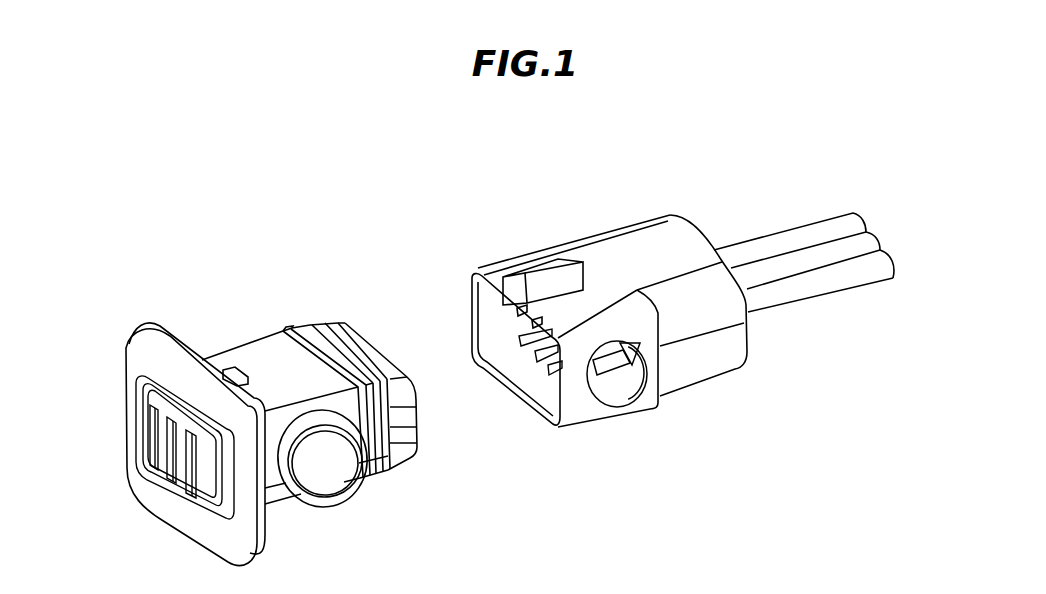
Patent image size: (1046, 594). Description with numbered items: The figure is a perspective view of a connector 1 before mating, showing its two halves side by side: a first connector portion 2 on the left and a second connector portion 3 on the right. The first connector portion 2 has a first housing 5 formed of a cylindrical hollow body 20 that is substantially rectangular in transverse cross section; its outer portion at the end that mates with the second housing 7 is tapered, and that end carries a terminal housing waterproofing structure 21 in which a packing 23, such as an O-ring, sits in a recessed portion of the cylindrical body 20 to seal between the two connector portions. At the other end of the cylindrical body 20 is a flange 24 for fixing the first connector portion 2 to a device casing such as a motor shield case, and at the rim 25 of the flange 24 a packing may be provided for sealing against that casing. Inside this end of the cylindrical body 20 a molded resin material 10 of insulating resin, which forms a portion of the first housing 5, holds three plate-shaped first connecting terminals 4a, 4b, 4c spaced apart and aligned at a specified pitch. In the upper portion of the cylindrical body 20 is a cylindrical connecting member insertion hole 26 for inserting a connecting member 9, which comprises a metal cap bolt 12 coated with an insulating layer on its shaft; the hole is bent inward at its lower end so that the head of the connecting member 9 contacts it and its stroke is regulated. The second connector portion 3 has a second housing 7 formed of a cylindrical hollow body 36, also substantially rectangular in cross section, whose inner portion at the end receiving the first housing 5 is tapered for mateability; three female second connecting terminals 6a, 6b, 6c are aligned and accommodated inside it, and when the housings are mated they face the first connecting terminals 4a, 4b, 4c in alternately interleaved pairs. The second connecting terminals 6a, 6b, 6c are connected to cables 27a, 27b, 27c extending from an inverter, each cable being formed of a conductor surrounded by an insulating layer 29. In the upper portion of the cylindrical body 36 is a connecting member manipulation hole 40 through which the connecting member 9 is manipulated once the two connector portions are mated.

The connector 1 is at (367, 172).
The first connector portion 2 is at (271, 360).
The second connector portion 3 is at (636, 249).
The first connecting terminal 4a is at (184, 488).
The first connecting terminal 4b is at (170, 478).
The first connecting terminal 4c is at (152, 445).
The first housing 5 is at (337, 325).
The second connecting terminal 6a is at (550, 374).
The second connecting terminal 6b is at (535, 358).
The second connecting terminal 6c is at (522, 343).
The second housing 7 is at (680, 233).
The connecting member 9 is at (331, 470).
The molded resin material 10 is at (195, 512).
The bolt 12 is at (311, 488).
The cylindrical body 20 is at (408, 436).
The terminal housing waterproofing structure 21 is at (292, 320).
The packing 23 is at (340, 367).
The flange 24 is at (163, 323).
The rim 25 is at (143, 350).
The connecting member insertion hole 26 is at (357, 470).
The cable 27a is at (823, 302).
The cable 27b is at (877, 223).
The cable 27c is at (782, 222).
The insulating layer 29 is at (876, 273).
The cylindrical body 36 is at (707, 348).
The connecting member manipulation hole 40 is at (628, 387).